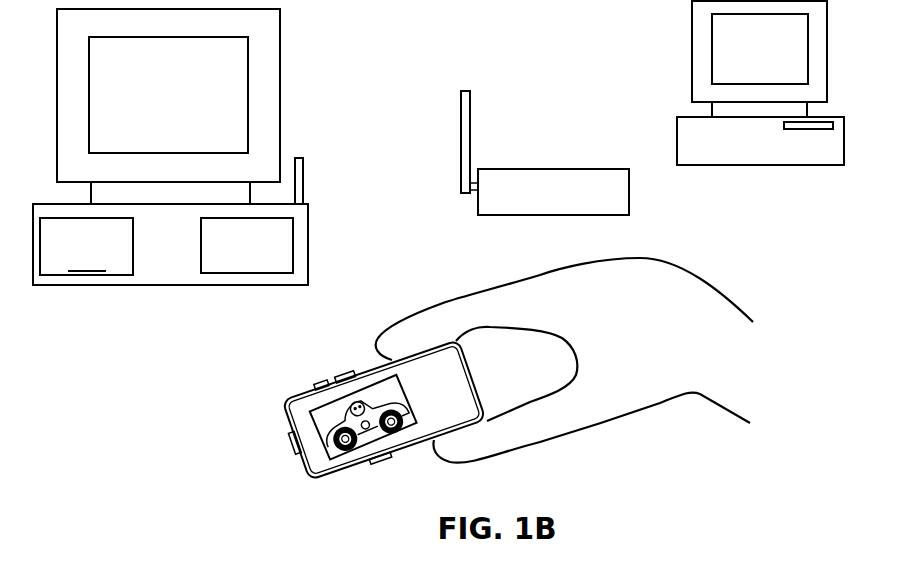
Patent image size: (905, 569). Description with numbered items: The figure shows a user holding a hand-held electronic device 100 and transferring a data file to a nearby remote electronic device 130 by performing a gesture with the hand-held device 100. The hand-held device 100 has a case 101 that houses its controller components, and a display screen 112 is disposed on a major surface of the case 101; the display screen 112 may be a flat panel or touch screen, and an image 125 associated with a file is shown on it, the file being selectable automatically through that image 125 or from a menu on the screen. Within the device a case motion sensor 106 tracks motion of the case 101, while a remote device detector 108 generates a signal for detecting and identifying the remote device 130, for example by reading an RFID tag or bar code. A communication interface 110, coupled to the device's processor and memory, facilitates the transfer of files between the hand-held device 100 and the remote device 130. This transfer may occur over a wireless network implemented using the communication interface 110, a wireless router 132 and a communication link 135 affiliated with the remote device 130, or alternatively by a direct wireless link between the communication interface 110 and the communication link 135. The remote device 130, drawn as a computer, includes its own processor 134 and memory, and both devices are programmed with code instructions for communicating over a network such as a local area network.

The hand-held electronic device 100 is at (353, 404).
The case 101 is at (345, 373).
The case motion sensor 106 is at (385, 463).
The remote device detector 108 is at (290, 447).
The communication interface 110 is at (318, 378).
The display screen 112 is at (458, 384).
The image 125 is at (310, 393).
The remote device 130 is at (280, 82).
The wireless router 132 is at (528, 168).
The processor 134 is at (201, 250).
The communication link 135 is at (303, 188).